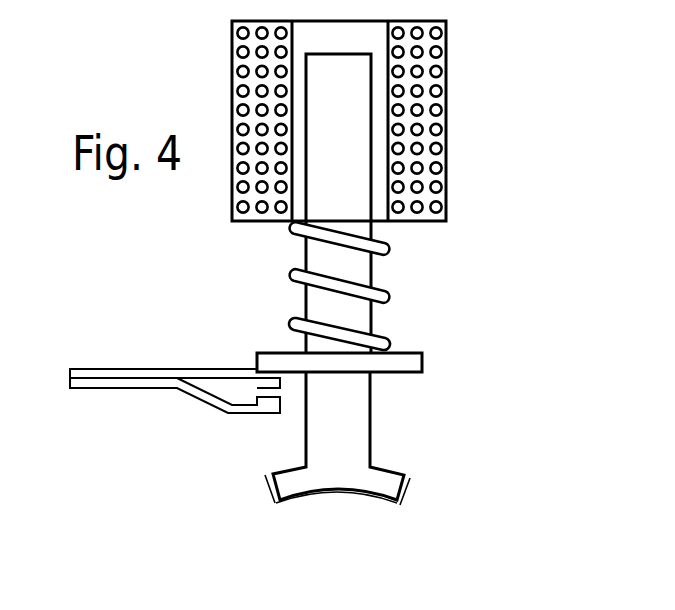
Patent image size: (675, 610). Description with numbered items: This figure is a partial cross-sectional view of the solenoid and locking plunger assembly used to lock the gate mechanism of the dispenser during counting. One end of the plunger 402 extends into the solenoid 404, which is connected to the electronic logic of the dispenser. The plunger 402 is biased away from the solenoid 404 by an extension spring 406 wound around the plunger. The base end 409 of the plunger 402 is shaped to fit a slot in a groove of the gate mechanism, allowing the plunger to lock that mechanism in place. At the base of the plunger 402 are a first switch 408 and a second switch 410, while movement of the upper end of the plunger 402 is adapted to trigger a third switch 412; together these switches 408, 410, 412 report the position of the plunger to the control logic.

The plunger 402 is at (372, 440).
The solenoid 404 is at (445, 143).
The extension spring 406 is at (390, 300).
The first switch 408 is at (263, 486).
The base end 409 is at (348, 478).
The second switch 410 is at (407, 487).
The third switch 412 is at (250, 372).